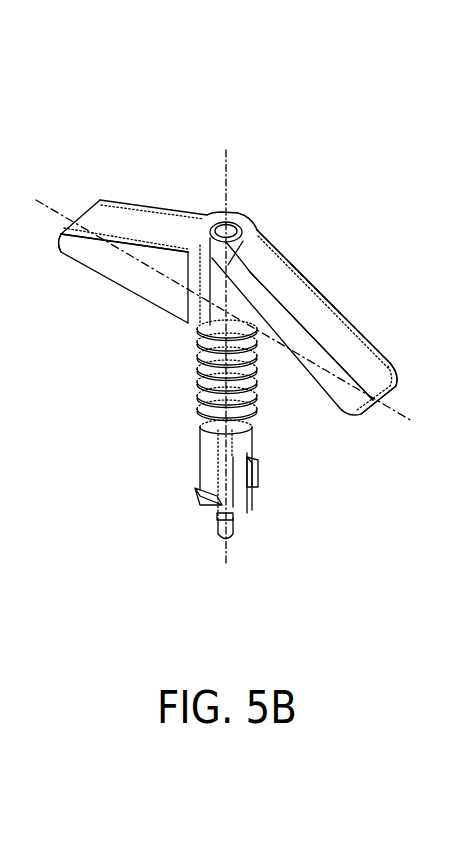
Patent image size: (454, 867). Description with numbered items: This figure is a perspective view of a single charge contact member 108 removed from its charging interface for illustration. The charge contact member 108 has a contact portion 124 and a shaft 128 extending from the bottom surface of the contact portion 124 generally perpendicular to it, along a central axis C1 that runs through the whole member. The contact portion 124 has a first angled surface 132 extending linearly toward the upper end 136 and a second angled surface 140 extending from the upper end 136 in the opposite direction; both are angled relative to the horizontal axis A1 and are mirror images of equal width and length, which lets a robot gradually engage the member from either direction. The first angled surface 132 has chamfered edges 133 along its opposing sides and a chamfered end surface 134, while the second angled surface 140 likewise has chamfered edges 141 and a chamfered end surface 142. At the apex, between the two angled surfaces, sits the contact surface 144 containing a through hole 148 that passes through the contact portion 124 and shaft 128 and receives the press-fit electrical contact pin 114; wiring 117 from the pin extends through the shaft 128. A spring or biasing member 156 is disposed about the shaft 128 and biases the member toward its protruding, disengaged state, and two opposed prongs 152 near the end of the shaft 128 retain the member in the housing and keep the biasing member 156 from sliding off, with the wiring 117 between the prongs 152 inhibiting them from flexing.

The charge contact member 108 is at (234, 112).
The upper end 136 is at (238, 152).
The electrical contact pin 114 is at (216, 225).
The through hole 148 is at (220, 229).
The contact surface 144 is at (250, 216).
The first angled surface 132 is at (128, 200).
The chamfered end surface 134 is at (60, 236).
The chamfered edges 133 is at (137, 233).
The contact portion 124 is at (345, 272).
The second angled surface 140 is at (303, 300).
The chamfered edges 141 is at (337, 310).
The chamfered end surface 142 is at (360, 388).
The horizontal axis A1 is at (400, 409).
The spring or biasing member 156 is at (268, 416).
The shaft 128 is at (200, 436).
The prongs 152 is at (200, 502).
The wiring 117 is at (230, 528).
The central axis C1 is at (228, 554).